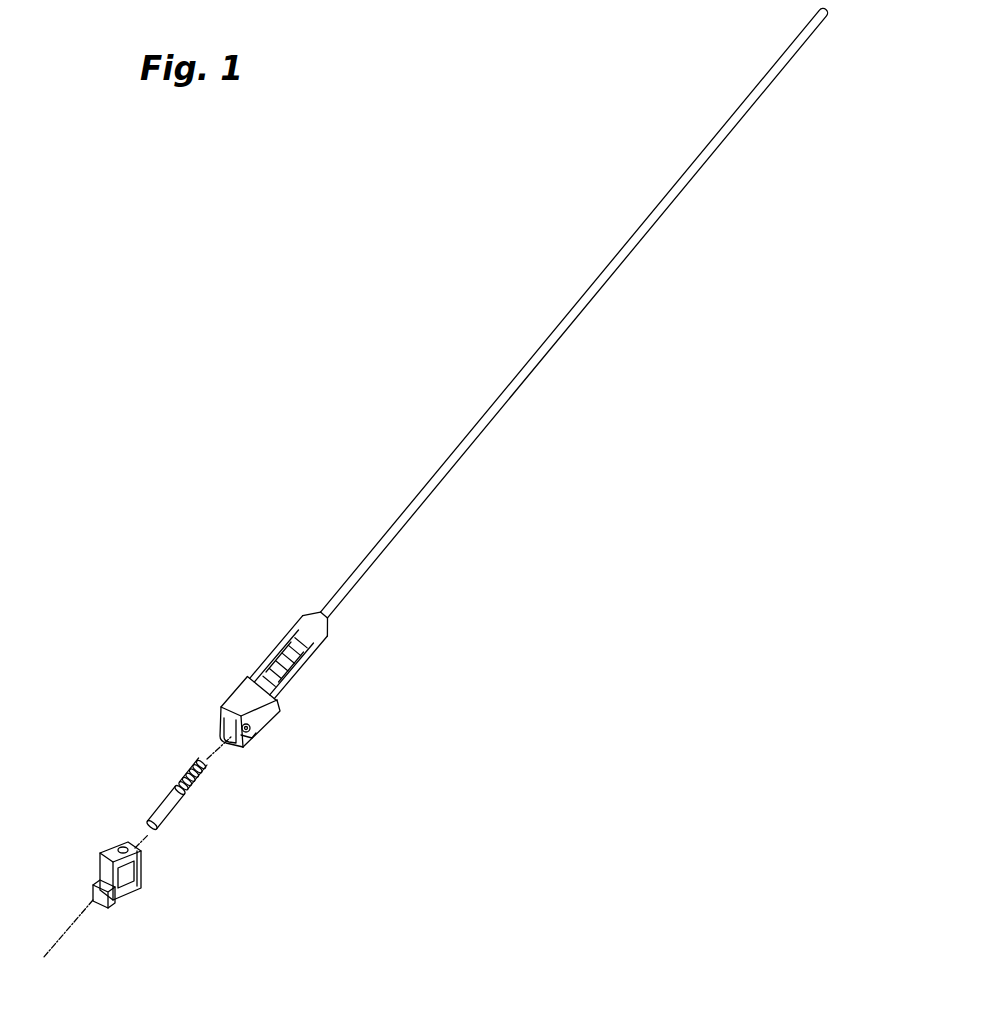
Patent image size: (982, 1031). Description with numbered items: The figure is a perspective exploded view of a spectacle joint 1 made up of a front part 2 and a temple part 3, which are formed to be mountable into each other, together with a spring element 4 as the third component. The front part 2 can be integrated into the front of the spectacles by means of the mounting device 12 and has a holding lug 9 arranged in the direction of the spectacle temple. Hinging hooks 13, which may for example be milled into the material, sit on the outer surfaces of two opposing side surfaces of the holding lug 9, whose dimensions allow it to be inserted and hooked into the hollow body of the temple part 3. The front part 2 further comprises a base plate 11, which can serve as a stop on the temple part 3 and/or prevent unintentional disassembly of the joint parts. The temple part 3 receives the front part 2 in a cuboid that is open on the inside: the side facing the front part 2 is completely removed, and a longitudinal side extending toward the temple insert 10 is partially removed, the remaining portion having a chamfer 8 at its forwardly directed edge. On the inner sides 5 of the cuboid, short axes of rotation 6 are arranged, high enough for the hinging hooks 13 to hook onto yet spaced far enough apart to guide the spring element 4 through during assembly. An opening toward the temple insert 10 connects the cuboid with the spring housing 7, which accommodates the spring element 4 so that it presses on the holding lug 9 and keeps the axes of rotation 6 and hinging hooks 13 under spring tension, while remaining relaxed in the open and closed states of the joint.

The spectacle joint 1 is at (85, 657).
The front part 2 is at (141, 868).
The temple part 3 is at (246, 690).
The spring element 4 is at (166, 803).
The inner sides 5 is at (258, 731).
The axes of rotation 6 is at (258, 738).
The spring housing 7 is at (312, 653).
The chamfer 8 is at (262, 714).
The holding lug 9 is at (140, 857).
The temple insert 10 is at (492, 419).
The base plate 11 is at (128, 874).
The mounting device 12 is at (105, 906).
The hinging hooks 13 is at (124, 846).